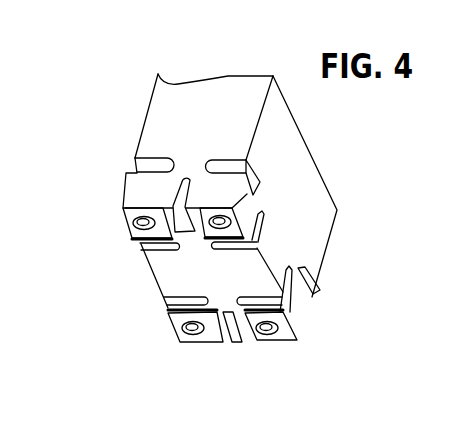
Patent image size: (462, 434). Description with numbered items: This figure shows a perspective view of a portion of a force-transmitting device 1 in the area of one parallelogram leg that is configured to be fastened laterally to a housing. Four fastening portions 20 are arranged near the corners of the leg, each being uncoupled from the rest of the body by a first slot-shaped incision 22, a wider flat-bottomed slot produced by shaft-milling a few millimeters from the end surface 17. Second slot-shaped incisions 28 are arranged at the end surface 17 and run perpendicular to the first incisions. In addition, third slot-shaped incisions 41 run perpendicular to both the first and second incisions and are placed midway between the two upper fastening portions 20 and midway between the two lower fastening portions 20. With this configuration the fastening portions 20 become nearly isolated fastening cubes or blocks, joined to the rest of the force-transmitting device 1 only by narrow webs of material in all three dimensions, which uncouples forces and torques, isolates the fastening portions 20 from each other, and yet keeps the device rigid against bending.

The force-transmitting device 1 is at (265, 69).
The end surface 17 is at (177, 273).
The fastening portion 20 is at (118, 220).
The first slot-shaped incision 22 is at (148, 163).
The second slot-shaped incision 28 is at (142, 247).
The third slot-shaped incision 41 is at (181, 202).